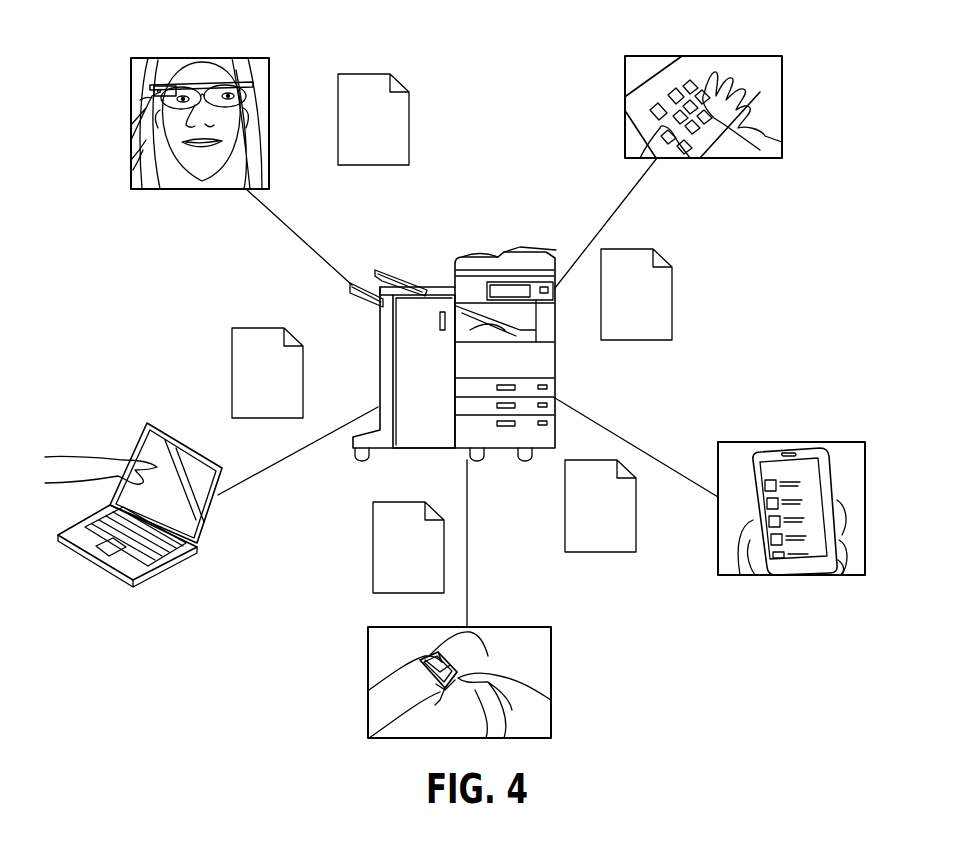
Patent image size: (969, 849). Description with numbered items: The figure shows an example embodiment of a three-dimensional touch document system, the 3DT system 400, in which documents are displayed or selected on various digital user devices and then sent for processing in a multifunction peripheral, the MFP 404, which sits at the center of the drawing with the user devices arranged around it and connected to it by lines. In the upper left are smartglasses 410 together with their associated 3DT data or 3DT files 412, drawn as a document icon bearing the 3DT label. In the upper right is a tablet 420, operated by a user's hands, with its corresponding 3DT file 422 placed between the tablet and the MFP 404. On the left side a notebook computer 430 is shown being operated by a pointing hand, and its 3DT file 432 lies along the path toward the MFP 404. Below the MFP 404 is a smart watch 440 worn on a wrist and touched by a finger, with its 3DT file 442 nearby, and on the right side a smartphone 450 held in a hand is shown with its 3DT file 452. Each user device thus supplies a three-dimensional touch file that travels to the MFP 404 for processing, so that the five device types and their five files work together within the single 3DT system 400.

The 3DT system 400 is at (806, 116).
The MFP 404 is at (493, 253).
The smartglasses 410 is at (163, 80).
The 3DT files 412 is at (408, 128).
The tablet 420 is at (682, 140).
The 3DT file 422 is at (672, 300).
The notebook computer 430 is at (163, 427).
The 3DT file 432 is at (258, 328).
The smart watch 440 is at (423, 658).
The 3DT file 442 is at (373, 548).
The smartphone 450 is at (790, 476).
The 3DT file 452 is at (600, 552).